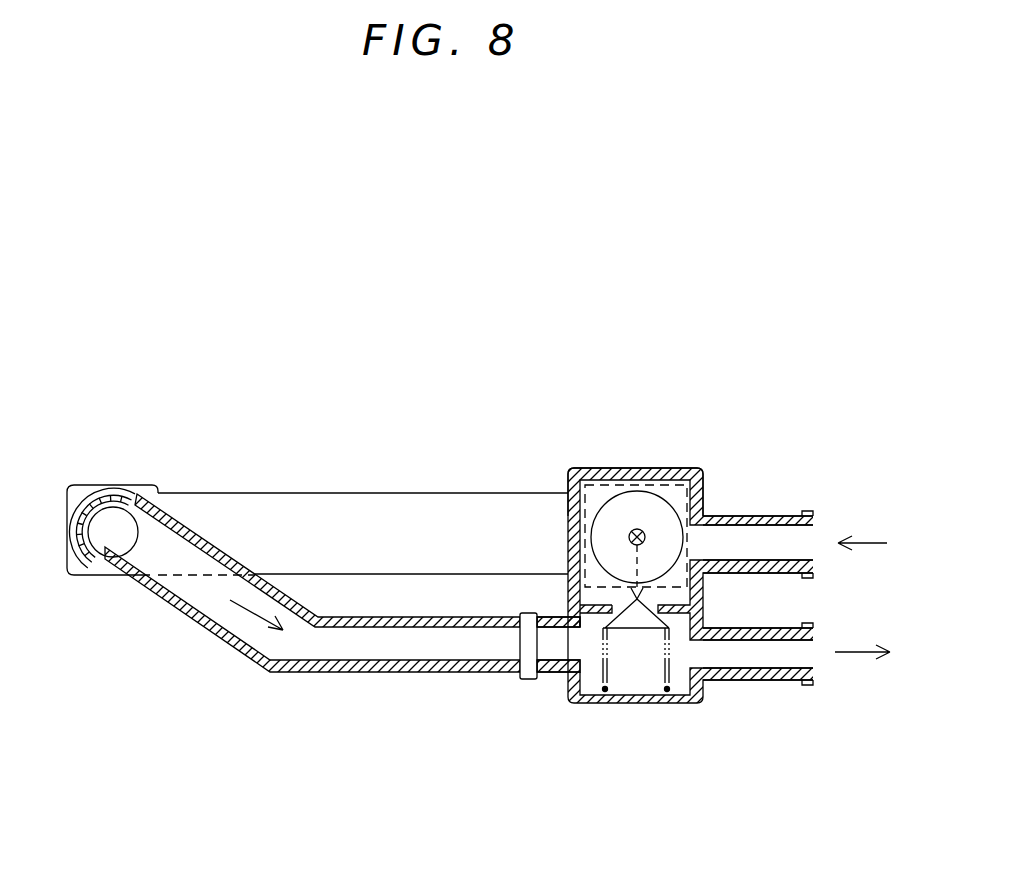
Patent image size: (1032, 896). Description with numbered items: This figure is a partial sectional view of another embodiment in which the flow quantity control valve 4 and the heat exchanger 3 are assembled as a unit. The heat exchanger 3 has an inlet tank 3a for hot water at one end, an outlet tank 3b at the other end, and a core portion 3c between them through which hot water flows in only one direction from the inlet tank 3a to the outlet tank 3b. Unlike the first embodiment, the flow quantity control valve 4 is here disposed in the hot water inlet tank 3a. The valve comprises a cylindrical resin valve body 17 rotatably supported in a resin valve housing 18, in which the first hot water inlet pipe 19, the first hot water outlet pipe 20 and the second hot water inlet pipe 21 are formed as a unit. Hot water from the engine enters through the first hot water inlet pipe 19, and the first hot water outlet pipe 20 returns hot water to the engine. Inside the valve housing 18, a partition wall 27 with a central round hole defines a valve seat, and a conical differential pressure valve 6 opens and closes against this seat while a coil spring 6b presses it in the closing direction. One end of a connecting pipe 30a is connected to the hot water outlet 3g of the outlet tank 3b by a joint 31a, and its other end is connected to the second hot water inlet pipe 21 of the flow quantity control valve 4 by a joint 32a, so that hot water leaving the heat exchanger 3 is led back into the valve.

The heat exchanger 3 is at (340, 472).
The inlet tank 3a is at (694, 490).
The outlet tank 3b is at (75, 486).
The core portion 3c is at (410, 512).
The hot water outlet 3g is at (112, 538).
The flow quantity control valve 4 is at (610, 460).
The differential pressure valve 6 is at (637, 618).
The coil spring 6b is at (668, 684).
The valve body 17 is at (665, 520).
The valve housing 18 is at (640, 478).
The first hot water inlet pipe 19 is at (767, 540).
The first hot water outlet pipe 20 is at (773, 655).
The second hot water inlet pipe 21 is at (558, 673).
The partition wall 27 is at (556, 632).
The connecting pipe 30a is at (298, 670).
The joint 31a is at (77, 508).
The joint 32a is at (527, 680).